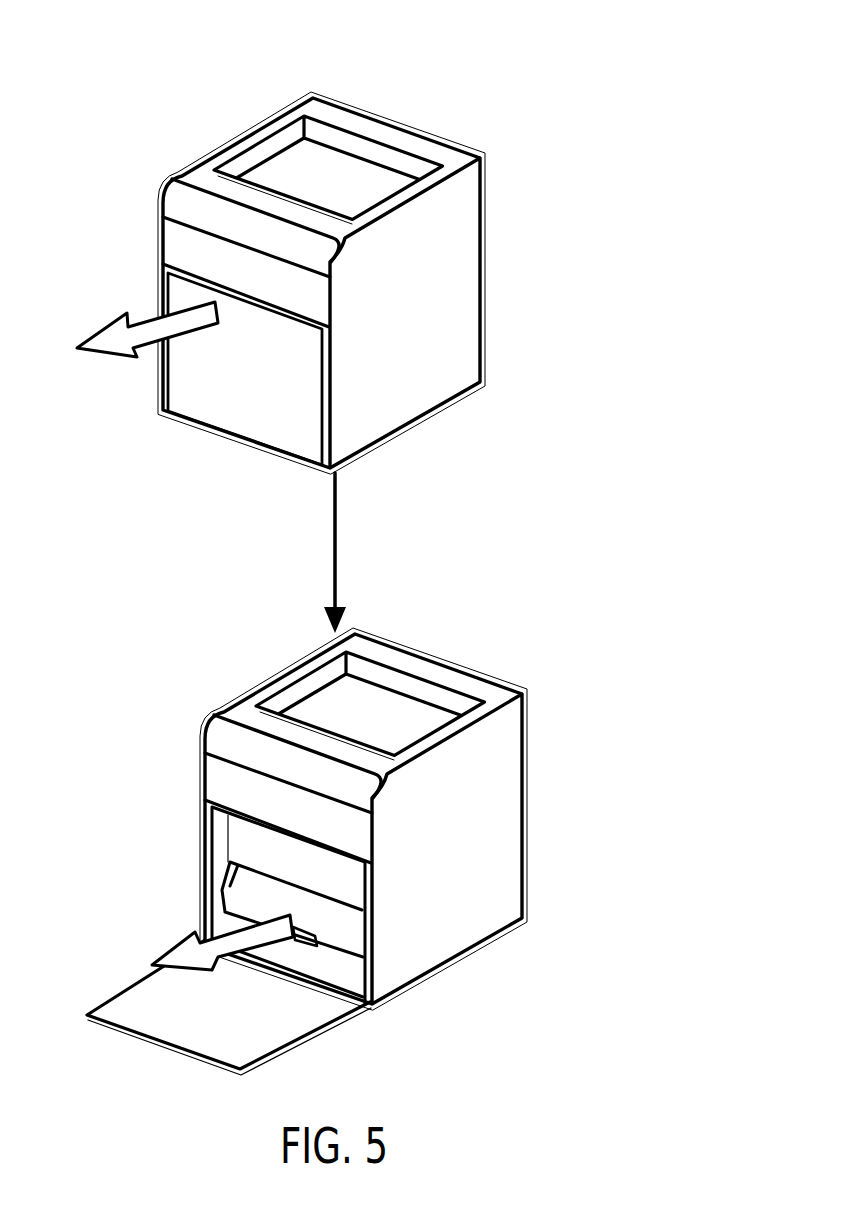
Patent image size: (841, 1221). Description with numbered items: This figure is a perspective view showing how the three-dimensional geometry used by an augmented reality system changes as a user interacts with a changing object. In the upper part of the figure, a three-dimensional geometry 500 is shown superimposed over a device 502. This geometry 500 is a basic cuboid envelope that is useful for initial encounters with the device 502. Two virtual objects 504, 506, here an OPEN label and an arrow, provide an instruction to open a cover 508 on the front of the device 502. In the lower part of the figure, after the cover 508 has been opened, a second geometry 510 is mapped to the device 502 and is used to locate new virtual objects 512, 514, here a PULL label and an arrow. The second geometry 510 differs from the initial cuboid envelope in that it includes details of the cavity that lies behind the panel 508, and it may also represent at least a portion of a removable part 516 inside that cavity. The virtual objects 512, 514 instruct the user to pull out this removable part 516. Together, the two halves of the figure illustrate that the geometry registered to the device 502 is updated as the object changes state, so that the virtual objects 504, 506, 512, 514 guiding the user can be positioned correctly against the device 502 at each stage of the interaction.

The three-dimensional geometry 500 is at (162, 183).
The device 502 is at (328, 108).
The virtual object 504 is at (68, 282).
The virtual object 506 is at (108, 357).
The cover 508 is at (218, 417).
The second geometry 510 is at (217, 717).
The virtual object 512 is at (153, 900).
The virtual object 514 is at (160, 953).
The removable part 516 is at (325, 943).